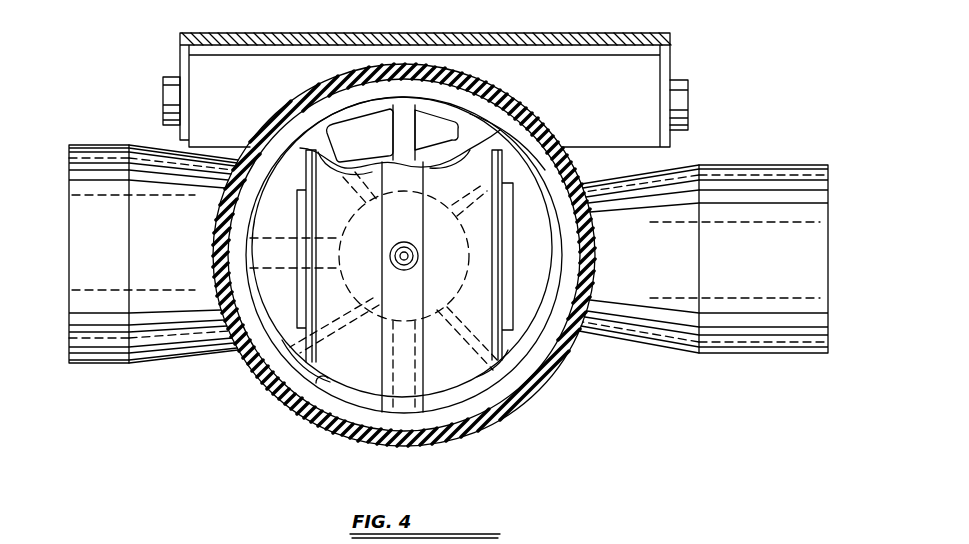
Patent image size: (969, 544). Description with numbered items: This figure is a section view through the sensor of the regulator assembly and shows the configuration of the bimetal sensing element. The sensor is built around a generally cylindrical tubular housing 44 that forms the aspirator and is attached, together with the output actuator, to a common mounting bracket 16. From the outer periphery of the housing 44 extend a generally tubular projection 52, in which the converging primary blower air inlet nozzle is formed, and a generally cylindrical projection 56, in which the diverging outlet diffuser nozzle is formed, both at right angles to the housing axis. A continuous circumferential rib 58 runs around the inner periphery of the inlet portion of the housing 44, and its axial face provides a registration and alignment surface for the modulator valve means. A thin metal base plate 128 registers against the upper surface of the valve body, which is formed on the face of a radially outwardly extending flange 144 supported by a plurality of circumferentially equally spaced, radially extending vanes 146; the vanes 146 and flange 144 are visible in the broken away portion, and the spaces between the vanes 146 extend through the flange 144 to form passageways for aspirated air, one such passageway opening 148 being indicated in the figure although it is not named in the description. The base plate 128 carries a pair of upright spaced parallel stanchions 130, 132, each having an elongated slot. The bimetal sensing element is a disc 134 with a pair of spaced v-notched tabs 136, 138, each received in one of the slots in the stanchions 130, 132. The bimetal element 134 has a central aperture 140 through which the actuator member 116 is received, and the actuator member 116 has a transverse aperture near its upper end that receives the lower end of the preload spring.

The mounting bracket 16 is at (243, 33).
The tubular housing 44 is at (521, 399).
The tubular projection 52 is at (750, 355).
The cylindrical projection 56 is at (110, 366).
The circumferential rib 58 is at (327, 384).
The actuator member 116 is at (411, 266).
The base plate 128 is at (222, 248).
The stanchion 130 is at (262, 378).
The stanchion 132 is at (537, 367).
The bimetal sensing element 134 is at (513, 124).
The v-notched tab 136 is at (297, 202).
The v-notched tab 138 is at (513, 277).
The central aperture 140 is at (396, 256).
The flange 144 is at (452, 127).
The vanes 146 is at (400, 140).
The left window 148 is at (346, 137).